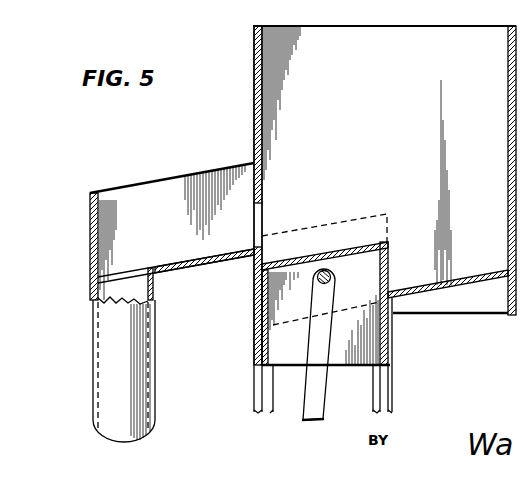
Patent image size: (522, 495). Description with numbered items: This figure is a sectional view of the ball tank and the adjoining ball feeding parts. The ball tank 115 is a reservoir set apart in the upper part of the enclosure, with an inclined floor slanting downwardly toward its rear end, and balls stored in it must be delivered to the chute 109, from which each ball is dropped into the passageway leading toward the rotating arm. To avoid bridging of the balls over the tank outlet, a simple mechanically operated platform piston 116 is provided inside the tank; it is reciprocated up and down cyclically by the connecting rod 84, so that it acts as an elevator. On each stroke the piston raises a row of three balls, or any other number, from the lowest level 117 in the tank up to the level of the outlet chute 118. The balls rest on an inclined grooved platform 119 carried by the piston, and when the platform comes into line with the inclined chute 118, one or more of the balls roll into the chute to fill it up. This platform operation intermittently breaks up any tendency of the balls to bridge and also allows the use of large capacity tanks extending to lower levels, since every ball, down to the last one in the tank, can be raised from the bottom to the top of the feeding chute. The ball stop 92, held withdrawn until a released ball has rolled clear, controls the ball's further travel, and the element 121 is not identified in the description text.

The connecting rod 84 is at (310, 400).
The ball stop 92 is at (264, 9).
The chute 109 is at (140, 322).
The ball tank 115 is at (482, 40).
The platform piston 116 is at (388, 271).
The lowest level 117 is at (467, 280).
The outlet chute 118 is at (245, 248).
The inclined grooved platform 119 is at (347, 250).
The channel 121 is at (109, 233).